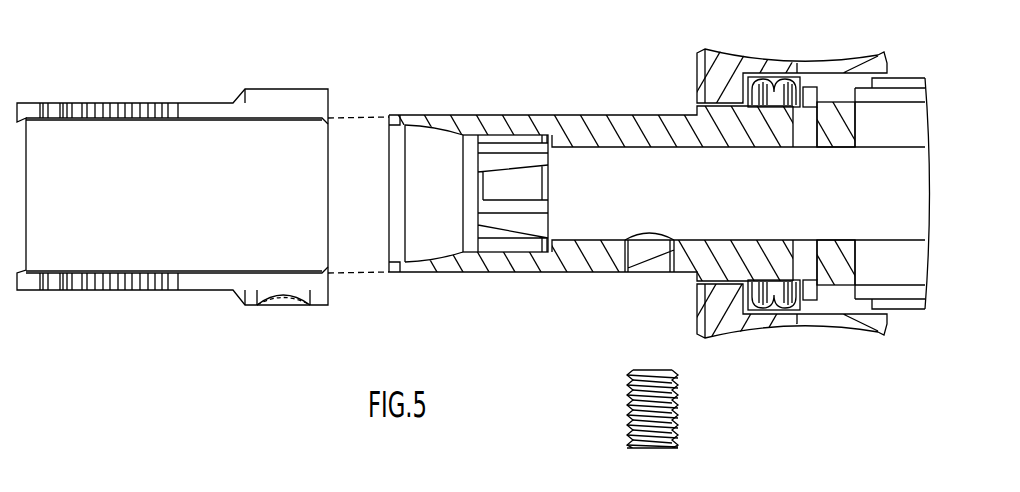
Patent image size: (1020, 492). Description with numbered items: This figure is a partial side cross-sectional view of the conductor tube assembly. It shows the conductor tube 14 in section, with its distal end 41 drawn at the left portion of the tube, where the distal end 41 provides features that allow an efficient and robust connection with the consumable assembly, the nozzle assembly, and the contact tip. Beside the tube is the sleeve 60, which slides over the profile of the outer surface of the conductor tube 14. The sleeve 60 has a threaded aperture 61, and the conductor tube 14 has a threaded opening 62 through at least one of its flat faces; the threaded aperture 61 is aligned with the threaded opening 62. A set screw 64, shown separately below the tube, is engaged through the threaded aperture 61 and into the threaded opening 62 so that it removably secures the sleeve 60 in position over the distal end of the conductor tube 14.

The conductor tube 14 is at (614, 119).
The distal end 41 is at (407, 111).
The sleeve 60 is at (268, 110).
The threaded aperture 61 is at (277, 283).
The threaded opening 62 is at (653, 260).
The set screw 64 is at (630, 413).